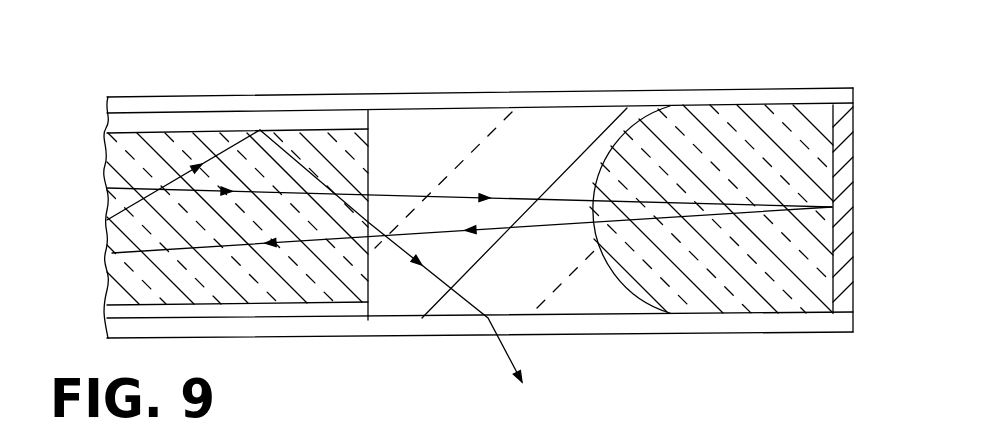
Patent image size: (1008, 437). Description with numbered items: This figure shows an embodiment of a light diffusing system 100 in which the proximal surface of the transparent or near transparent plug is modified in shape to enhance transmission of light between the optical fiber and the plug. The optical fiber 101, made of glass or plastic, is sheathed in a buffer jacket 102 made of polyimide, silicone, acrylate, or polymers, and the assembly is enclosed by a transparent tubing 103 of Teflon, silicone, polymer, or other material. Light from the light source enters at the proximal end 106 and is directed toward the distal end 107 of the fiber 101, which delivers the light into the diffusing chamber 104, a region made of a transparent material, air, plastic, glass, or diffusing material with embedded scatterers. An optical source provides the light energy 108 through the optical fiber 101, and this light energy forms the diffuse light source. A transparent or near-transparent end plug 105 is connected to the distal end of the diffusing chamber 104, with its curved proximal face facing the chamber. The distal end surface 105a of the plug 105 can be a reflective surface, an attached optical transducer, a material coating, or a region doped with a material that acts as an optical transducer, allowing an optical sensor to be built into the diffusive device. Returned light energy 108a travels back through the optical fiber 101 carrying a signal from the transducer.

The system 100 is at (311, 36).
The optical fiber 101 is at (113, 272).
The buffer jacket 102 is at (107, 126).
The transparent tubing 103 is at (370, 96).
The diffusing chamber 104 is at (557, 148).
The end plug 105 is at (722, 120).
The distal end surface 105a is at (852, 130).
The proximal end 106 is at (111, 215).
The distal end 107 is at (370, 284).
The light energy 108 is at (504, 356).
The light energy 108a is at (540, 227).